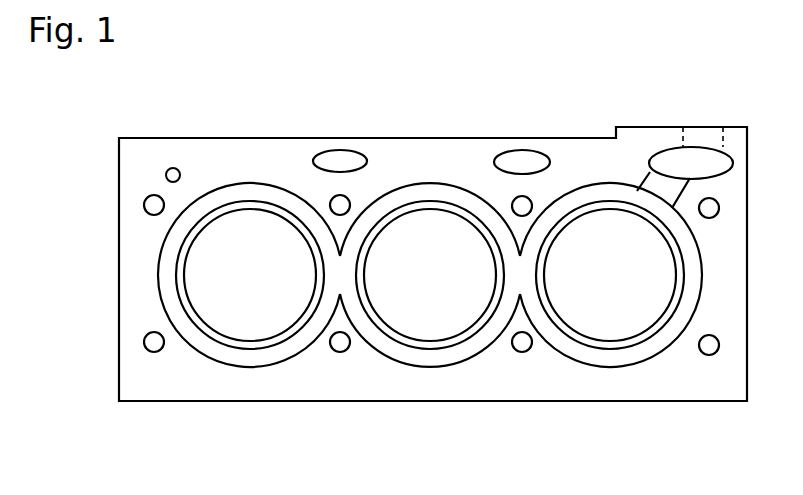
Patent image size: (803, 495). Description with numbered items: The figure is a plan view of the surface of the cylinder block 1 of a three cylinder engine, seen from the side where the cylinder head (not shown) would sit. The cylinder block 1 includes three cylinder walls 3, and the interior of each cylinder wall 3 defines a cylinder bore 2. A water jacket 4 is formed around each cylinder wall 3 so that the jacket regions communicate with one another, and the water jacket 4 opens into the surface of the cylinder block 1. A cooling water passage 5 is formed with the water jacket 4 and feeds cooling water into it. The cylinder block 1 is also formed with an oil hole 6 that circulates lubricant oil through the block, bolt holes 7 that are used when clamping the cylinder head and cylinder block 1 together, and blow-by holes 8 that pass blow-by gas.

The cylinder block 1 is at (380, 130).
The cylinder bore 2 is at (241, 316).
The cylinder wall 3 is at (461, 336).
The water jacket 4 is at (584, 199).
The cooling water passage 5 is at (710, 163).
The oil hole 6 is at (172, 167).
The bolt hole 7 is at (144, 206).
The blow-by hole 8 is at (329, 150).